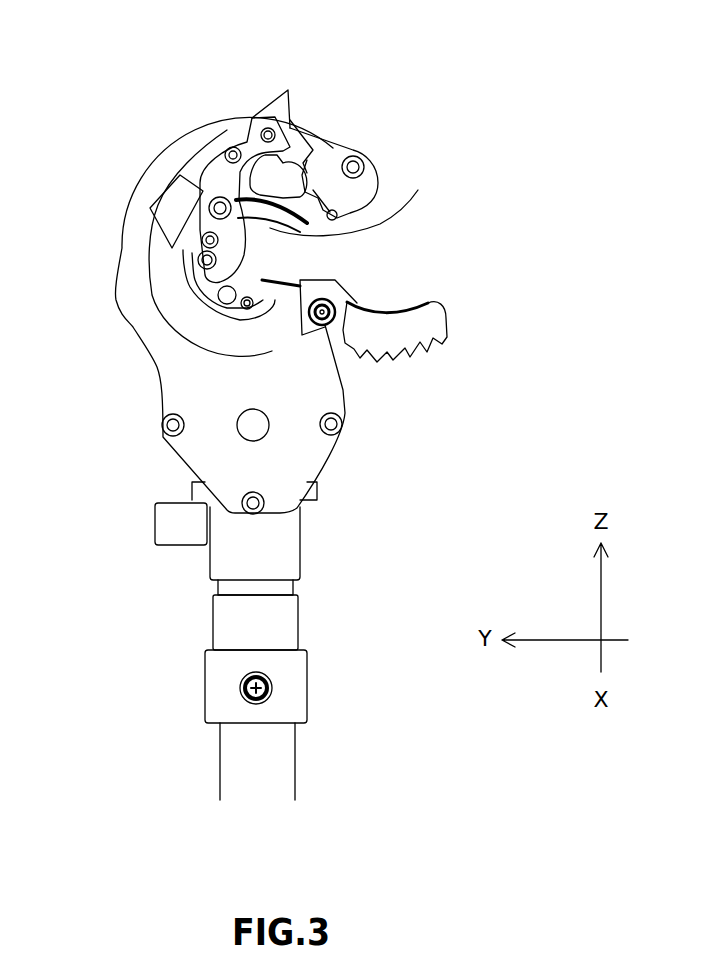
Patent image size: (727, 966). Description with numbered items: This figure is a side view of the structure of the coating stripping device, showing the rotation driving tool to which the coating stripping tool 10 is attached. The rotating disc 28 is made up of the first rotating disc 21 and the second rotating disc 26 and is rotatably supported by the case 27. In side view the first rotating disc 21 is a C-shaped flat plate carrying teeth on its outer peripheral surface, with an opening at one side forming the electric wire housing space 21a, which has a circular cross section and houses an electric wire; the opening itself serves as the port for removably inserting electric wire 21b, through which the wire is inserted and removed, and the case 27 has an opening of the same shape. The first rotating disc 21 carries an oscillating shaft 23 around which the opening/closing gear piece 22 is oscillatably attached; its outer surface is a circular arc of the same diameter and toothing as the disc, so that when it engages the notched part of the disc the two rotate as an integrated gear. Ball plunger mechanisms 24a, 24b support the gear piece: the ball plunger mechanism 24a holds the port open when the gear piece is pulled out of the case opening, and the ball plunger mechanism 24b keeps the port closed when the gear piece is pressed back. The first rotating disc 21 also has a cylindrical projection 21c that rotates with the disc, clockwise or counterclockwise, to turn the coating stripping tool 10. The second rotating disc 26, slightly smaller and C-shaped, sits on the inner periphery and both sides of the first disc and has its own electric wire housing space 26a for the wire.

The coating stripping tool 10 is at (326, 409).
The first rotating disc 21 is at (300, 185).
The electric wire housing space 21a is at (263, 253).
The port for removably inserting electric wire 21b is at (330, 252).
The projection 21c is at (200, 160).
The opening/closing gear piece 22 is at (427, 350).
The oscillating shaft 23 is at (340, 318).
The ball plunger mechanism 24a is at (352, 347).
The ball plunger mechanism 24b is at (313, 190).
The second rotating disc 26 is at (363, 230).
The electric wire housing space 26a is at (271, 215).
The case 27 is at (200, 390).
The rotating disc 28 is at (467, 43).